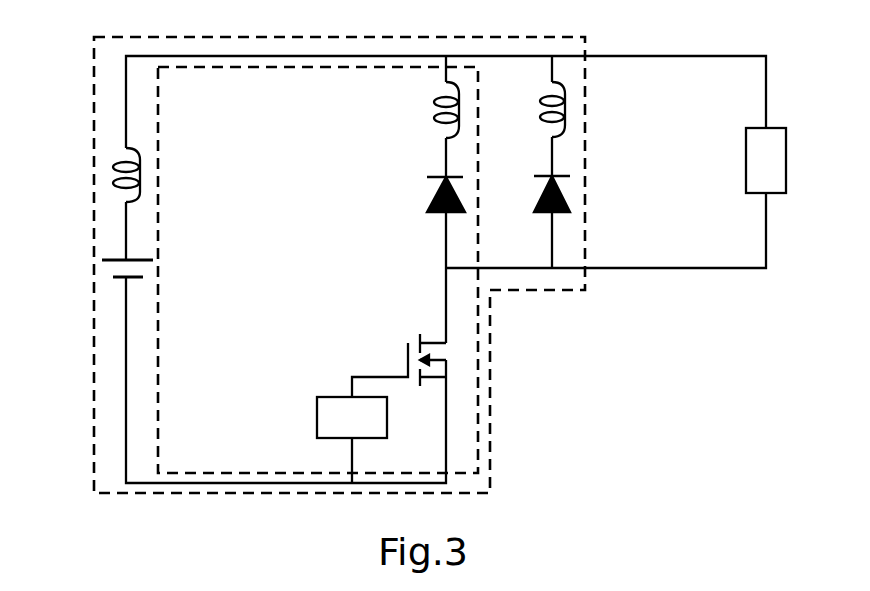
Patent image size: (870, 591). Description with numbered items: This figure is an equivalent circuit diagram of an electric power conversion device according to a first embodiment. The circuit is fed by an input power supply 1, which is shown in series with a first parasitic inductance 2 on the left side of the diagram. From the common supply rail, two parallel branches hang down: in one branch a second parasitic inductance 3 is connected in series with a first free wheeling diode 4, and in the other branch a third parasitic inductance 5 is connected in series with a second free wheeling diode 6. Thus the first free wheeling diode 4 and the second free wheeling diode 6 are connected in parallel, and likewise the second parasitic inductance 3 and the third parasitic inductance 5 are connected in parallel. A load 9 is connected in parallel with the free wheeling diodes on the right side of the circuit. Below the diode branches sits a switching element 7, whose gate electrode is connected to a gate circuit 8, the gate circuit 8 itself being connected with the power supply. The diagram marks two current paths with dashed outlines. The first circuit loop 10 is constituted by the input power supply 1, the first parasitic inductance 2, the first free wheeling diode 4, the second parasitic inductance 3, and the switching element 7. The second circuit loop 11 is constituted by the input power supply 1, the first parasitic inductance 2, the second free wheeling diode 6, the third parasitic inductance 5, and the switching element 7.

The input power supply 1 is at (106, 272).
The first parasitic inductance 2 is at (106, 180).
The second parasitic inductance 3 is at (430, 112).
The first free wheeling diode 4 is at (430, 188).
The third parasitic inductance 5 is at (568, 112).
The second free wheeling diode 6 is at (568, 188).
The switching element 7 is at (401, 333).
The gate circuit 8 is at (315, 417).
The load 9 is at (788, 155).
The first circuit loop 10 is at (158, 162).
The second circuit loop 11 is at (490, 472).